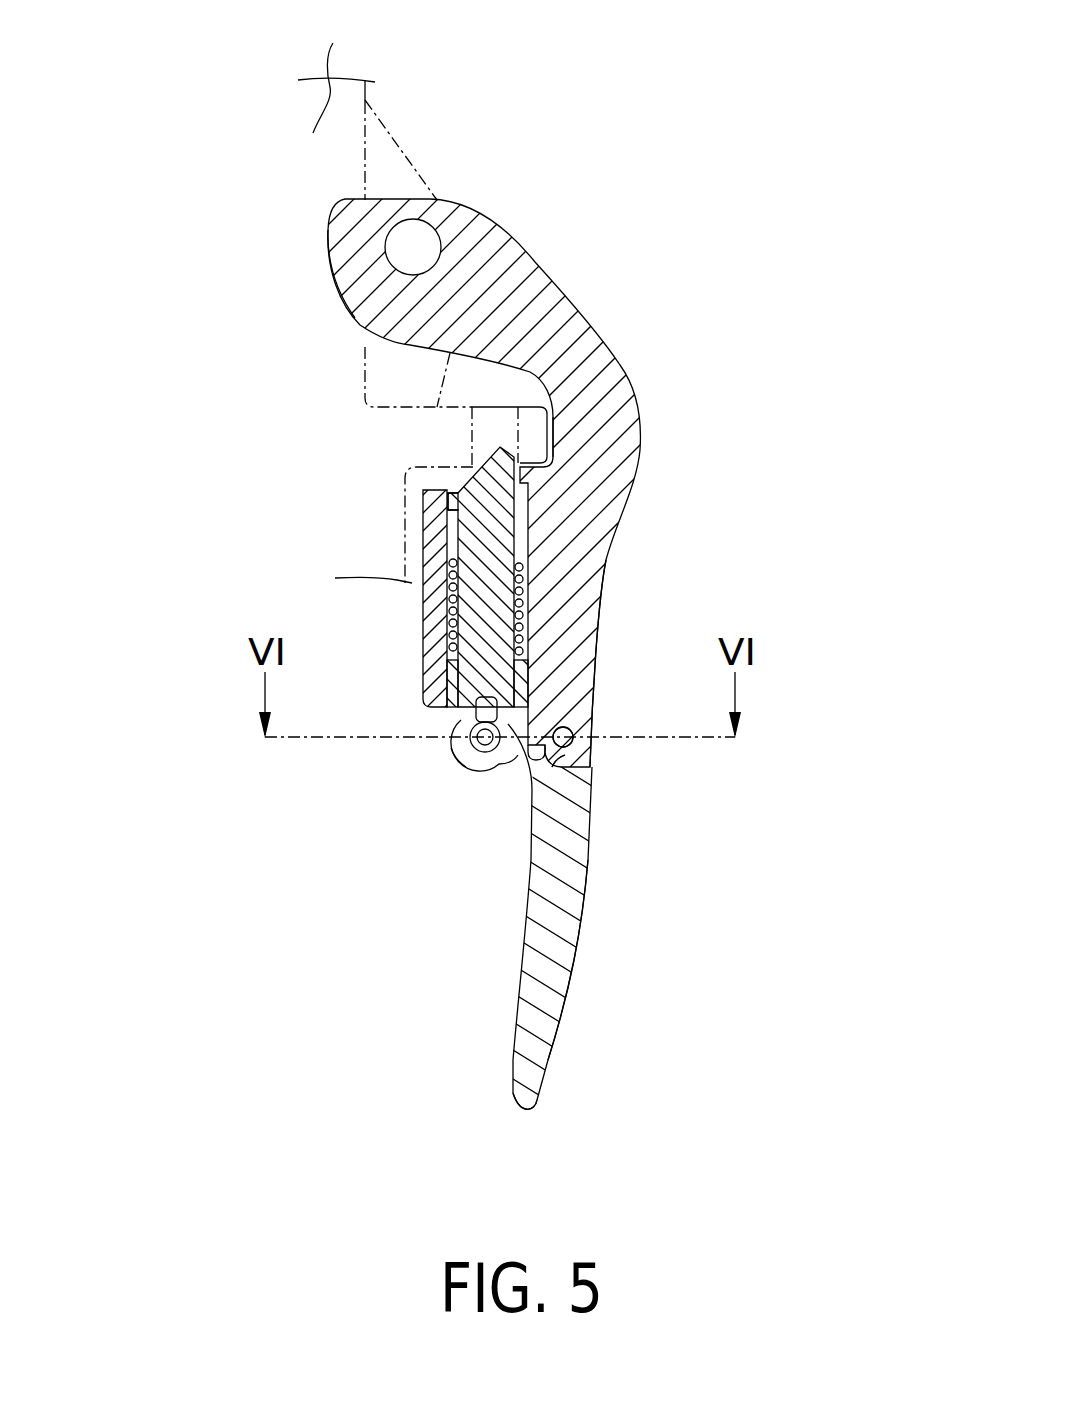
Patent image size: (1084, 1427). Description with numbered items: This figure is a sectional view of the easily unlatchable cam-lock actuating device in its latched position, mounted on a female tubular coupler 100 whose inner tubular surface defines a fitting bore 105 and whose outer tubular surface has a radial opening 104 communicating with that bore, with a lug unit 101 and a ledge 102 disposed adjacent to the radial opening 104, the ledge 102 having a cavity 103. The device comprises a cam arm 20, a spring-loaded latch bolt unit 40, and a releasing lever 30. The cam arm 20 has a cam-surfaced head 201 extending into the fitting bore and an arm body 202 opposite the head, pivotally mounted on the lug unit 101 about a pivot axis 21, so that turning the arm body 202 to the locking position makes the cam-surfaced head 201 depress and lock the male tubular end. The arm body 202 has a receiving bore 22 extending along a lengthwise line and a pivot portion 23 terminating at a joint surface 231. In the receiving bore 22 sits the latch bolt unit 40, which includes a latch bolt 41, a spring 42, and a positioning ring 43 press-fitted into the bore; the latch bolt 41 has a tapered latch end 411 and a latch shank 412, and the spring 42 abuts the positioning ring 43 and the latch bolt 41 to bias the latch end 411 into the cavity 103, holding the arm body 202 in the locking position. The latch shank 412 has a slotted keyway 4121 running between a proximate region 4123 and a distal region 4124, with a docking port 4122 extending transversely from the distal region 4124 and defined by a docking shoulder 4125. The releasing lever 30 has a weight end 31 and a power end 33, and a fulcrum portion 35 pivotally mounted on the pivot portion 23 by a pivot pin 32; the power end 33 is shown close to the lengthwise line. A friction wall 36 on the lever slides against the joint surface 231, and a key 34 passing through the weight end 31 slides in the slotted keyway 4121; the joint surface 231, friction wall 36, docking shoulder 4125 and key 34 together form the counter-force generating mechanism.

The fitting bore 105 is at (336, 67).
The female tubular coupler 100 is at (380, 107).
The lug unit 101 is at (410, 158).
The radial opening 104 is at (378, 188).
The pivot axis 21 is at (423, 237).
The cam-surfaced head 201 is at (330, 258).
The cam arm 20 is at (645, 383).
The cavity 103 is at (553, 418).
The ledge 102 is at (583, 453).
The spring-loaded latch bolt unit 40 is at (540, 515).
The latch end 411 is at (490, 450).
The receiving bore 22 is at (453, 490).
The latch bolt 41 is at (450, 523).
The arm body 202 is at (593, 572).
The latch shank 412 is at (490, 603).
The spring 42 is at (524, 628).
The proximate region 4123 is at (470, 680).
The positioning ring 43 is at (528, 695).
The slotted keyway 4121 is at (476, 708).
The pivot portion 23 is at (574, 754).
The fulcrum portion 35 is at (563, 737).
The weight end 31 is at (462, 745).
The key 34 is at (468, 770).
The distal region 4124 is at (478, 790).
The docking port 4122 is at (488, 760).
The pivot pin 32 is at (562, 770).
The joint surface 231 is at (563, 805).
The friction wall 36 is at (558, 761).
The releasing lever 30 is at (578, 993).
The docking shoulder 4125 is at (560, 833).
The power end 33 is at (530, 1092).